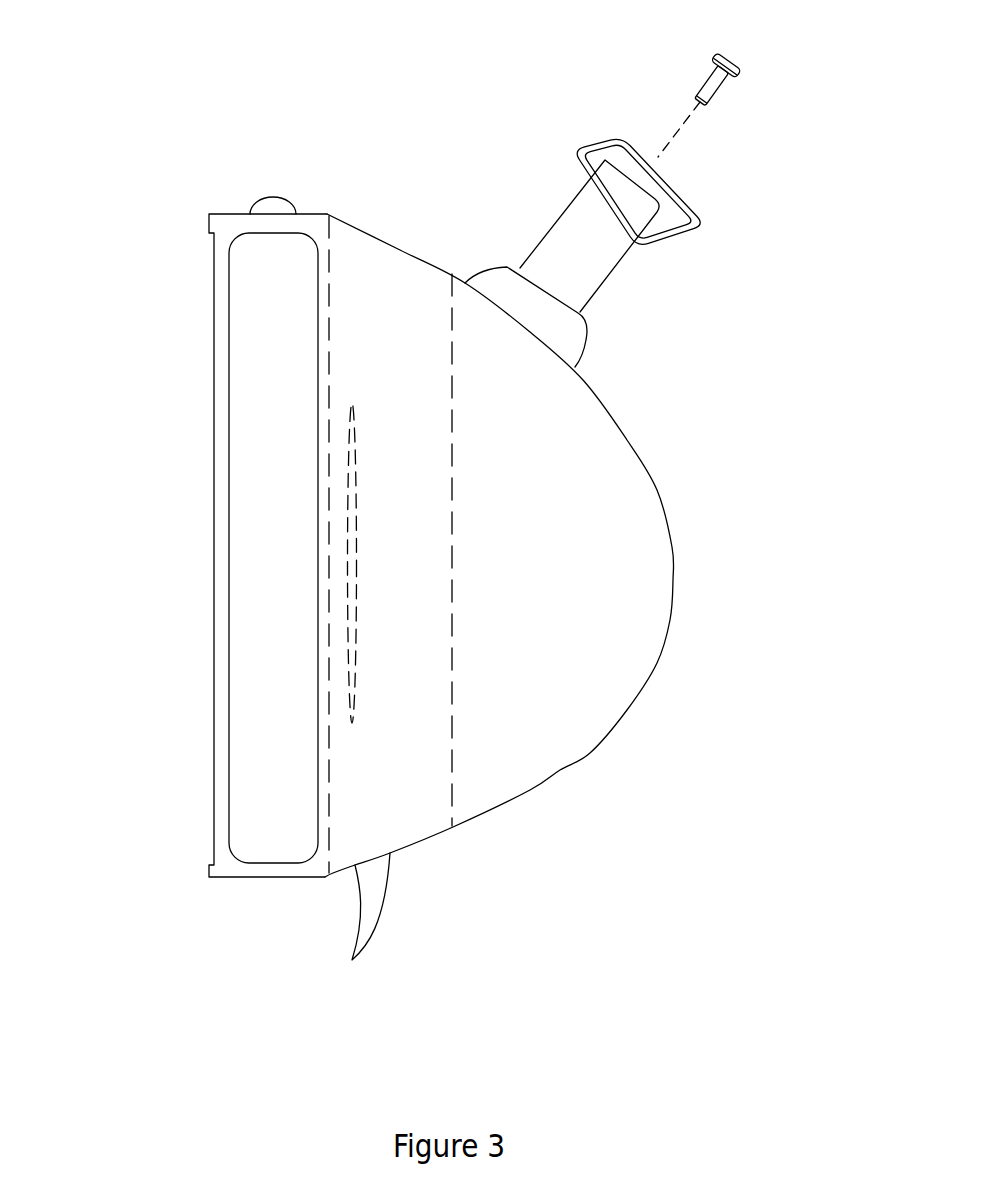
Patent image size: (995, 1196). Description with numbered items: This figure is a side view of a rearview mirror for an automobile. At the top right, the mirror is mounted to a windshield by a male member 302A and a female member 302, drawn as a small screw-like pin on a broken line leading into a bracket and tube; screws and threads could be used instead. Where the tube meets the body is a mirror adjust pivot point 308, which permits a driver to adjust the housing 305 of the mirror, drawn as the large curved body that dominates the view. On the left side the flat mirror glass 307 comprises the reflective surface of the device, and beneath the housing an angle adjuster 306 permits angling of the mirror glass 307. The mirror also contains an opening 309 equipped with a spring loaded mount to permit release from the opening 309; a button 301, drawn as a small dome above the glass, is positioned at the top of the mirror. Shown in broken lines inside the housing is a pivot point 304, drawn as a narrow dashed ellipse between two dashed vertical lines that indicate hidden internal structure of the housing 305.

The button/dome 301 is at (273, 174).
The female member 302 is at (710, 187).
The male member 302A is at (759, 81).
The pivot point 304 is at (379, 567).
The housing 305 is at (600, 761).
The angle adjuster 306 is at (401, 938).
The mirror glass 307 is at (189, 690).
The mirror adjust pivot point 308 is at (612, 336).
The opening 309 is at (263, 882).